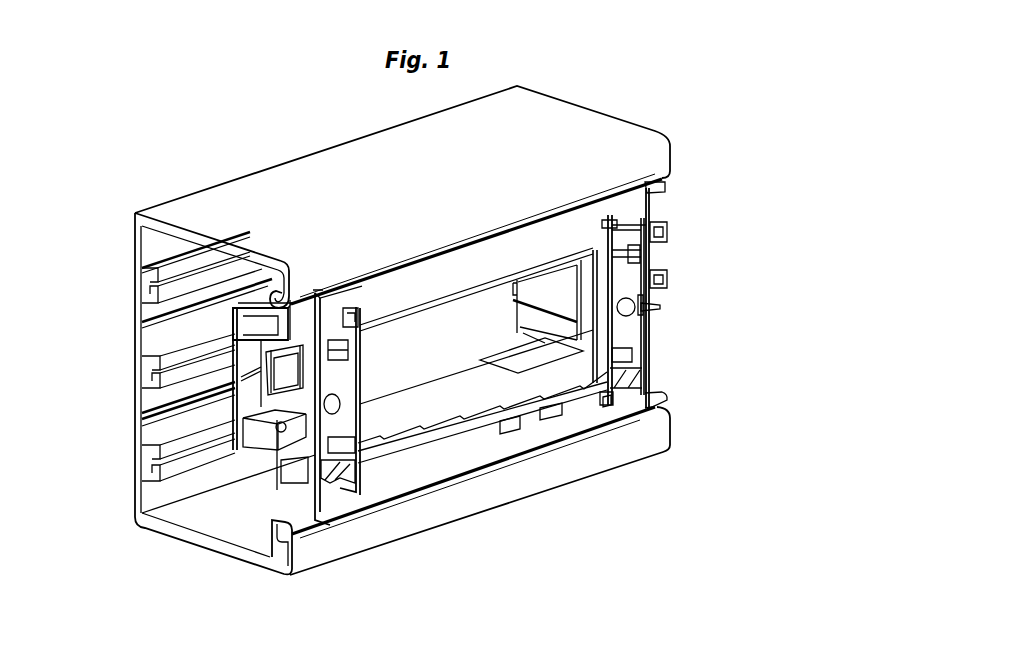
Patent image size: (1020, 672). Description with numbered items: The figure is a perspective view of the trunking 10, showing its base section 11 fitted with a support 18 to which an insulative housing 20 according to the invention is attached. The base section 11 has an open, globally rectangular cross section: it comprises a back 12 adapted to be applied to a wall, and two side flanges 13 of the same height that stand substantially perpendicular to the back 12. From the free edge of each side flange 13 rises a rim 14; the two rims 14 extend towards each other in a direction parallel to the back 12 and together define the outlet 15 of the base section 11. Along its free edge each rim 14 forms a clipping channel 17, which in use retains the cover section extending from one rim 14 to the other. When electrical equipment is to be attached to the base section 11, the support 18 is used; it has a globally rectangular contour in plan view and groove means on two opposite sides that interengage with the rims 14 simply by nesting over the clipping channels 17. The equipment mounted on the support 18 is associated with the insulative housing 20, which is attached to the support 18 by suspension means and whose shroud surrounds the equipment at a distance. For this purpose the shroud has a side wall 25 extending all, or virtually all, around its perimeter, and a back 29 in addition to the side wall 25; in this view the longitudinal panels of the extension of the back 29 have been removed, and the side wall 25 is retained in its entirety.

The trunking 10 is at (630, 97).
The base section 11 is at (177, 552).
The back 12 is at (112, 380).
The side flanges 13 is at (316, 180).
The rims 14 is at (660, 155).
The outlet 15 is at (529, 440).
The clipping channel 17 is at (278, 297).
The support 18 is at (438, 500).
The insulative housing 20 is at (218, 458).
The side wall 25 is at (256, 296).
The back 29 is at (453, 350).